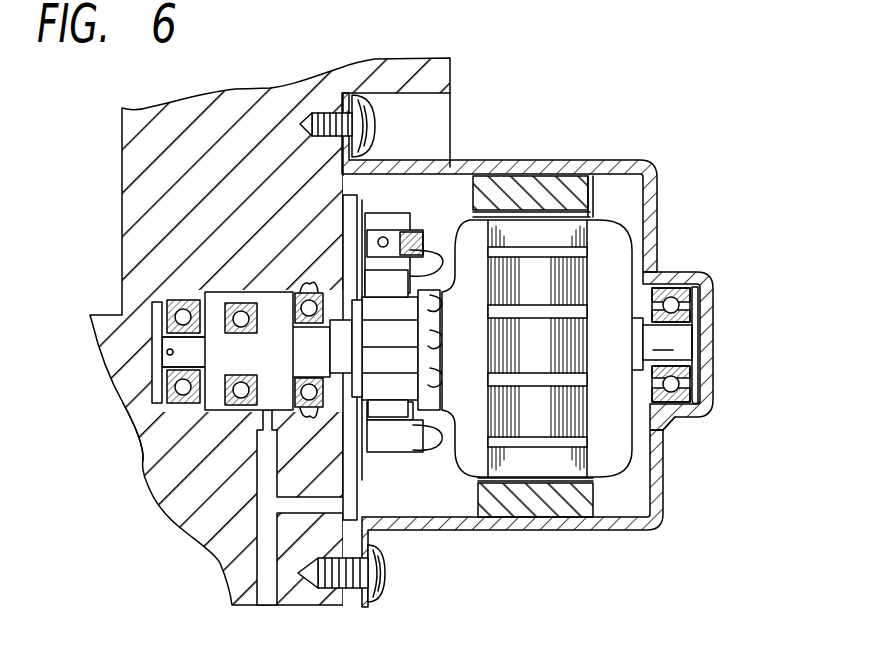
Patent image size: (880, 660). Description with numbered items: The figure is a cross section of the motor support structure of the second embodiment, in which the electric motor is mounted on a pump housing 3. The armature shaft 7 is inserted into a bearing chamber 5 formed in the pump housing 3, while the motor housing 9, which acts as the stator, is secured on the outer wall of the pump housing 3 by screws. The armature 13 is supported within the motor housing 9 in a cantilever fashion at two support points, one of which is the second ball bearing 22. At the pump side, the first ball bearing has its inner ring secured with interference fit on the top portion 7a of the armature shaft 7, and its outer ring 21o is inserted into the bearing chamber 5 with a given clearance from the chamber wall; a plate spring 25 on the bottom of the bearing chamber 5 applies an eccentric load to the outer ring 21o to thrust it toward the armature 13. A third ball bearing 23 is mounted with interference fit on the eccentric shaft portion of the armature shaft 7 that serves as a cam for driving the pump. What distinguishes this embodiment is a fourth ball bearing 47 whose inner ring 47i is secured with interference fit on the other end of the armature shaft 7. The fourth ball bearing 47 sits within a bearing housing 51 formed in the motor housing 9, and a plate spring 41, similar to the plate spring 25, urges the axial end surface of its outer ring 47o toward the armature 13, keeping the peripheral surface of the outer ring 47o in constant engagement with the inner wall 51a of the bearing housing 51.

The pump housing 3 is at (275, 105).
The bearing chamber 5 is at (160, 405).
The armature shaft 7 is at (680, 340).
The top portion of the armature shaft 7a is at (158, 368).
The motor housing 9 is at (538, 166).
The armature 13 is at (607, 228).
The outer ring of the first ball bearing 21o is at (193, 303).
The second ball bearing 22 is at (303, 418).
The third ball bearing 23 is at (236, 307).
The plate spring 25 is at (158, 333).
The plate spring 41 is at (698, 360).
The fourth ball bearing 47 is at (717, 349).
The inner ring of the fourth ball bearing 47i is at (718, 304).
The outer ring of the fourth ball bearing 47o is at (667, 420).
The bearing housing 51 is at (706, 276).
The inner wall of the bearing housing 51a is at (692, 418).